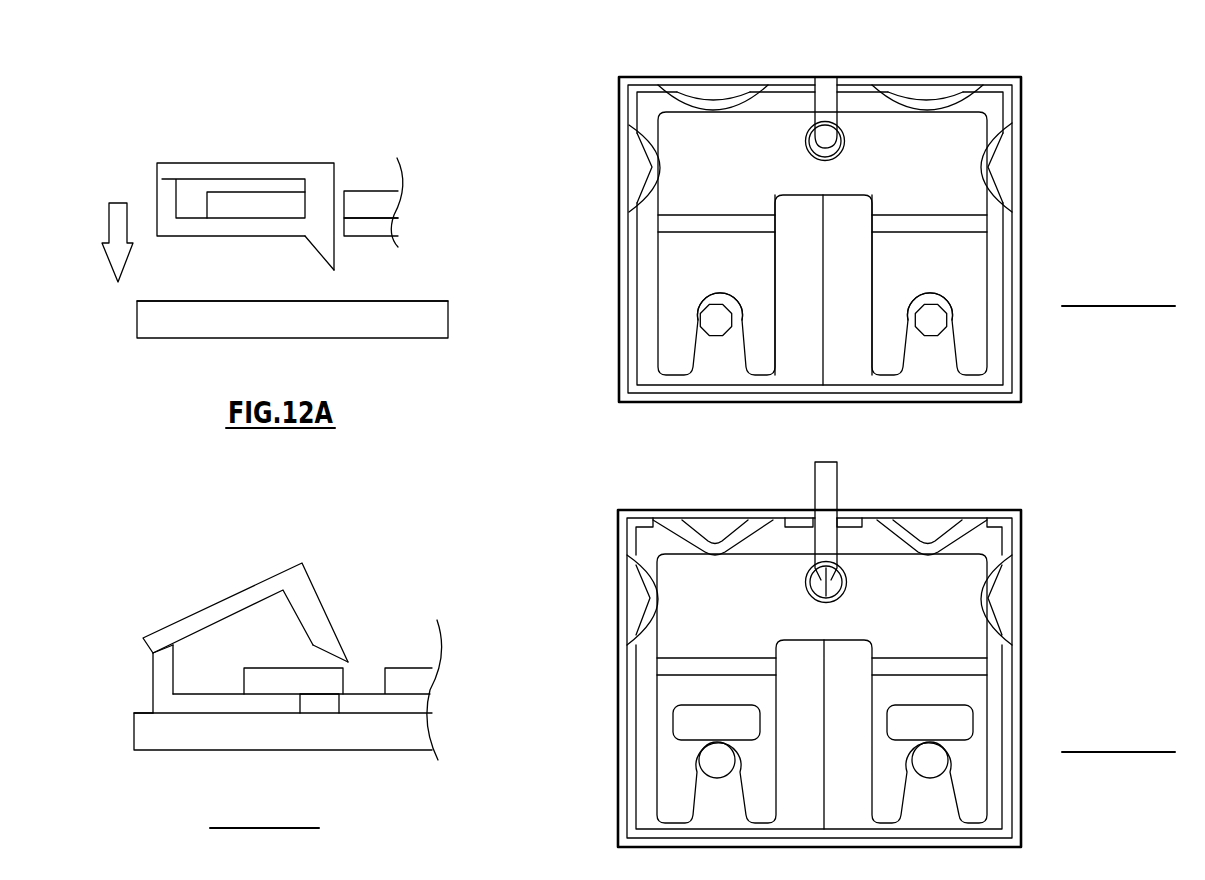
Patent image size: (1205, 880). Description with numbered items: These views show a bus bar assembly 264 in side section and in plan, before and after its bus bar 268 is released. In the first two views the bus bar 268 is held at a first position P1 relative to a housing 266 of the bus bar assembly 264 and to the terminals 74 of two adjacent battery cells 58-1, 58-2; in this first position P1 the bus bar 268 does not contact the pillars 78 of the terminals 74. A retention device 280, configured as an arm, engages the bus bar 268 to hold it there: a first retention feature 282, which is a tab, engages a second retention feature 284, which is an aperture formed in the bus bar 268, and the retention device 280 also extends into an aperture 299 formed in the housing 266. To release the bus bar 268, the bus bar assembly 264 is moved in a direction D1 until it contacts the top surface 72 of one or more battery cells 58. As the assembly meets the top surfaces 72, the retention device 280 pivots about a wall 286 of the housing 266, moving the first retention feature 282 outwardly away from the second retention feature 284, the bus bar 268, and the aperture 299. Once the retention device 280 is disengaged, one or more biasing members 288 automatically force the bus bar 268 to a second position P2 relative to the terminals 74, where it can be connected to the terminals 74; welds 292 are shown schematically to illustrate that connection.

In FIG. 12A, the battery cell 58 is at (298, 322).
In FIG. 13A, the battery cell 58 is at (250, 733).
In FIG. 12B, the first battery cell 58-1 is at (787, 365).
In FIG. 12B, the second battery cell 58-2 is at (863, 365).
In FIG. 12A, the top surface 72 is at (157, 300).
In FIG. 13A, the top surface 72 is at (138, 712).
In FIG. 12B, the terminal 74 is at (730, 303).
In FIG. 13B, the terminal 74 is at (740, 773).
In FIG. 12B, the pillar 78 is at (722, 320).
In FIG. 12A, the bus bar assembly 264 is at (248, 150).
In FIG. 13A, the bus bar assembly 264 is at (186, 585).
In FIG. 12B, the bus bar assembly 264 is at (657, 65).
In FIG. 13B, the bus bar assembly 264 is at (601, 559).
In FIG. 12A, the housing 266 is at (190, 228).
In FIG. 13A, the housing 266 is at (195, 702).
In FIG. 12B, the housing 266 is at (1017, 97).
In FIG. 13B, the housing 266 is at (1015, 702).
In FIG. 12A, the bus bar 268 is at (251, 203).
In FIG. 13A, the bus bar 268 is at (278, 675).
In FIG. 12B, the bus bar 268 is at (950, 135).
In FIG. 13B, the bus bar 268 is at (966, 584).
In FIG. 12A, the retention device 280 is at (286, 158).
In FIG. 13A, the retention device 280 is at (243, 585).
In FIG. 12B, the retention device 280 is at (827, 93).
In FIG. 13B, the retention device 280 is at (828, 495).
In FIG. 12A, the first retention feature 282 is at (325, 247).
In FIG. 13A, the first retention feature 282 is at (332, 642).
In FIG. 12B, the first retention feature 282 is at (830, 142).
In FIG. 13B, the first retention feature 282 is at (830, 562).
In FIG. 12A, the second retention feature 284 is at (338, 190).
In FIG. 13A, the second retention feature 284 is at (370, 678).
In FIG. 12B, the second retention feature 284 is at (838, 138).
In FIG. 13B, the second retention feature 284 is at (842, 588).
In FIG. 13A, the wall 286 is at (163, 673).
In FIG. 13B, the biasing member 288 is at (735, 526).
In FIG. 13B, the weld 292 is at (717, 712).
In FIG. 12A, the aperture 299 is at (343, 224).
In FIG. 13A, the aperture 299 is at (322, 703).
In FIG. 12A, the direction D1 is at (115, 222).
In FIG. 12B, the first position P1 is at (1077, 228).
In FIG. 13B, the second position P2 is at (1079, 640).